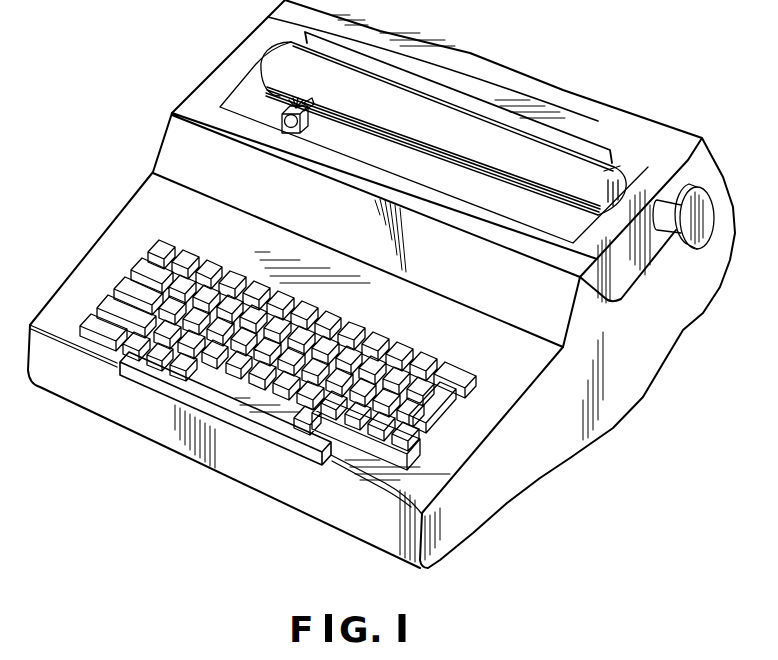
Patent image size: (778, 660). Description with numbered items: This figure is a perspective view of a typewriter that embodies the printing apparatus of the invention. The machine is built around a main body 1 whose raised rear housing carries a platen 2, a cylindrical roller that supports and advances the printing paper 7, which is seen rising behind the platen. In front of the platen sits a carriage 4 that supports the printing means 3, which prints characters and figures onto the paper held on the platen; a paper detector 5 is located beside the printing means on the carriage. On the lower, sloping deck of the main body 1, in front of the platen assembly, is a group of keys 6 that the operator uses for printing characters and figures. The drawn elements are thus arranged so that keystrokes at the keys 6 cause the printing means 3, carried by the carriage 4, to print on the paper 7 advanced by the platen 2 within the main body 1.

The main body 1 is at (557, 82).
The platen 2 is at (618, 163).
The printing means 3 is at (293, 100).
The carriage 4 is at (283, 107).
The paper detector 5 is at (351, 110).
The group of keys 6 is at (180, 357).
The printing paper 7 is at (575, 136).